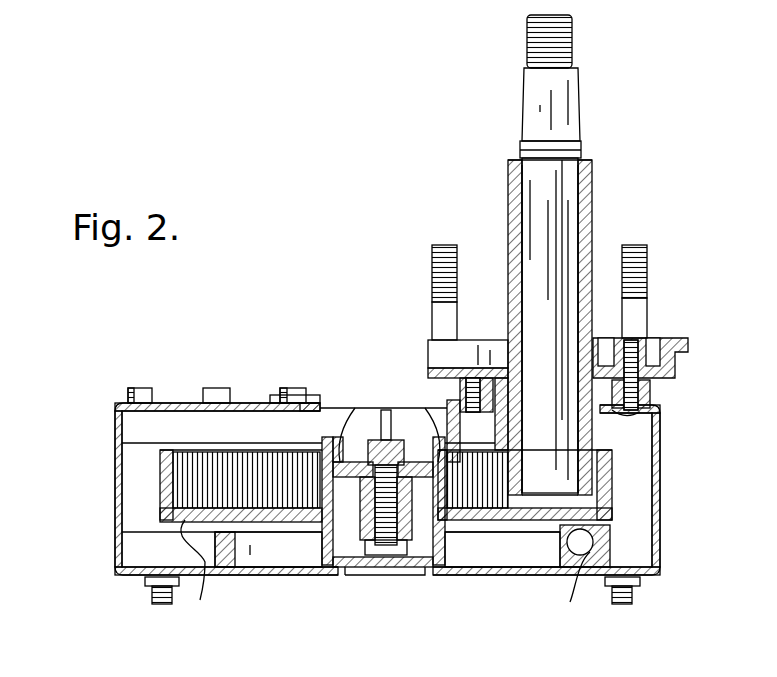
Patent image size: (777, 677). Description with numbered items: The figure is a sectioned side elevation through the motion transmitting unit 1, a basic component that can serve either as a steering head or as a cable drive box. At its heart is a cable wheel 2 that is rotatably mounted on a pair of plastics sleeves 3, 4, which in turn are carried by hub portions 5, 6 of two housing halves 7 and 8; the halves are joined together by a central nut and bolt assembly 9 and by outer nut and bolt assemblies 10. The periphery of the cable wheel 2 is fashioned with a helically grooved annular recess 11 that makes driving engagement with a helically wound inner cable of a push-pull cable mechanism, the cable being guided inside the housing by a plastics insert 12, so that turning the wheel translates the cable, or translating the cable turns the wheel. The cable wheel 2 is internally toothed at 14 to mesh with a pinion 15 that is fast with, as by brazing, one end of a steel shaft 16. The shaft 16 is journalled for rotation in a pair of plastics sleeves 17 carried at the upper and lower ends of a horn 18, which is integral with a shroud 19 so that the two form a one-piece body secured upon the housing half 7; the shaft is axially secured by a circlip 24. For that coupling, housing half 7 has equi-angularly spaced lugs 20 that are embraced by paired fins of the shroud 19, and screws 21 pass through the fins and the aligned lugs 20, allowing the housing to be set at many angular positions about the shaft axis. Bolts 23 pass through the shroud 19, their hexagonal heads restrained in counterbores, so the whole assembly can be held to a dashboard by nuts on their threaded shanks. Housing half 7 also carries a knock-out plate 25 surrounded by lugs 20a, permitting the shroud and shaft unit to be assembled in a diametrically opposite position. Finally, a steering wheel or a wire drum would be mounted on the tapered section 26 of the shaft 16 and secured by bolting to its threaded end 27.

The motion transmitting unit 1 is at (686, 340).
The cable wheel 2 is at (185, 520).
The plastics sleeve 3 is at (322, 448).
The plastics sleeve 4 is at (320, 540).
The hub portion 5 is at (340, 420).
The hub portion 6 is at (350, 565).
The housing half 7 is at (312, 403).
The housing half 8 is at (290, 577).
The central nut and bolt assembly 9 is at (395, 550).
The outer nut and bolt assembly 10 is at (152, 600).
The helically grooved annular recess 11 is at (385, 572).
The plastics insert 12 is at (615, 545).
The internal teeth 14 is at (178, 472).
The pinion 15 is at (500, 462).
The steel shaft 16 is at (560, 218).
The plastics sleeve 17 is at (510, 182).
The horn 18 is at (590, 195).
The shroud 19 is at (428, 343).
The lug 20 is at (460, 392).
The lug 20a is at (128, 396).
The screw 21 is at (640, 415).
The bolt 23 is at (438, 272).
The circlip 24 is at (585, 150).
The knock-out plate 25 is at (175, 403).
The tapered section 26 is at (560, 110).
The threaded end 27 is at (563, 48).